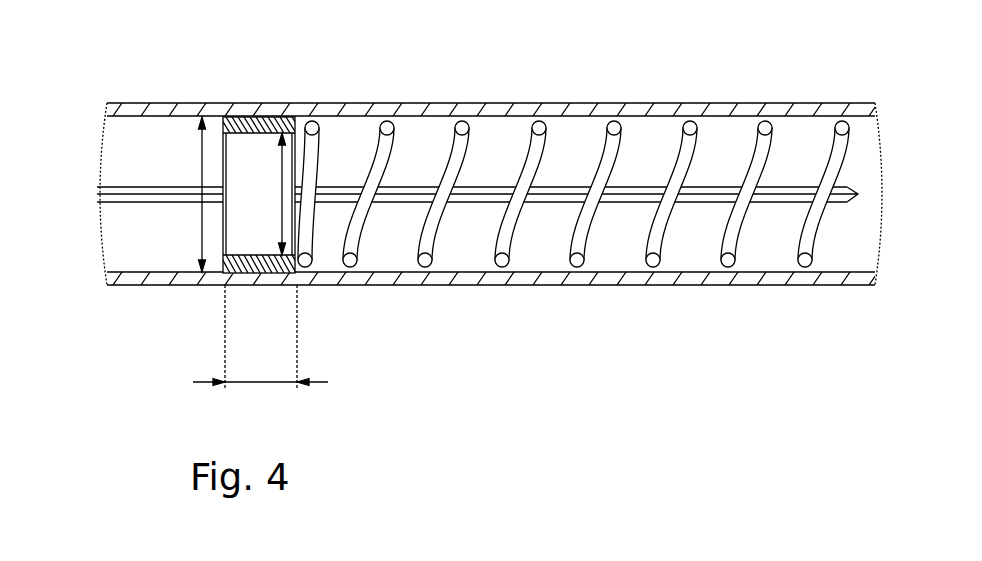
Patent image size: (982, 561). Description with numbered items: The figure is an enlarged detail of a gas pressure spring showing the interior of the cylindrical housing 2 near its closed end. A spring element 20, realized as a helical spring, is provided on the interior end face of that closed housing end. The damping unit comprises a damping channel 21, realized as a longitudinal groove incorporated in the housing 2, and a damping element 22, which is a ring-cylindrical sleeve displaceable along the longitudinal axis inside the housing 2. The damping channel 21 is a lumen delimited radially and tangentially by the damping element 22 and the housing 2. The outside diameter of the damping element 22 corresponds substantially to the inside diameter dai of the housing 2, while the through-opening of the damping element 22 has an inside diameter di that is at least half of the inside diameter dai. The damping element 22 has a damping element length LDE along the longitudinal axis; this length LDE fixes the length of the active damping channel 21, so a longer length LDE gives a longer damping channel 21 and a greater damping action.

The housing 2 is at (192, 105).
The spring element 20 is at (752, 175).
The damping channel 21 is at (125, 197).
The damping element 22 is at (253, 117).
The inside diameter of the housing dai is at (202, 217).
The inside diameter of the through-opening di is at (283, 172).
The damping element length LDE is at (260, 336).